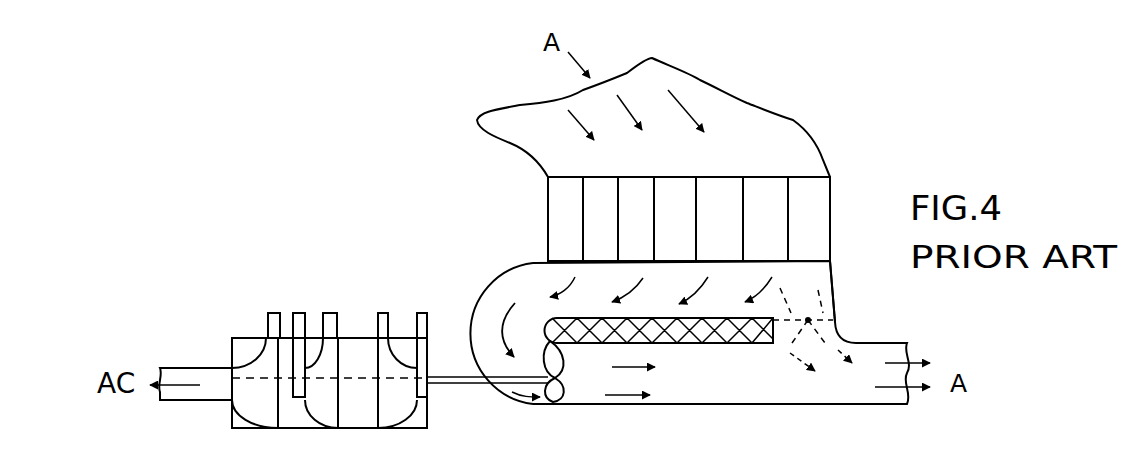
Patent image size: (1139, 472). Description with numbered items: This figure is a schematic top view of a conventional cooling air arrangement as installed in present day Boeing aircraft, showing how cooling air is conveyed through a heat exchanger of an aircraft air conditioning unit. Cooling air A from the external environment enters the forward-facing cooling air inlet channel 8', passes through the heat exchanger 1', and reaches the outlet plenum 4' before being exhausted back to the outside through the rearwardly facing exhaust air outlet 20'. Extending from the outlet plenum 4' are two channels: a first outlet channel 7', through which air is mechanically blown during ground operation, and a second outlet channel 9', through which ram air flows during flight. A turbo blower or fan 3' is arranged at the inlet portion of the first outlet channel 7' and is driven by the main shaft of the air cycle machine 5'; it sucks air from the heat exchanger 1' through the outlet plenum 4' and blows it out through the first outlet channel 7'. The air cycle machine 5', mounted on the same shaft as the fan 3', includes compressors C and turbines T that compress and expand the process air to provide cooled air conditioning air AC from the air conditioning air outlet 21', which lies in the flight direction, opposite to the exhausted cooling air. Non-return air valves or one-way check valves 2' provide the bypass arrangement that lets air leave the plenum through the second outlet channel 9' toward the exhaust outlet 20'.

The cooling air inlet channel 8' is at (653, 117).
The heat exchanger 1' is at (708, 219).
The second outlet channel 9' is at (838, 289).
The non-return air valves 2' is at (826, 329).
The exhaust air outlet 20' is at (908, 353).
The outlet plenum 4' is at (613, 327).
The turbo blower or fan 3' is at (575, 403).
The first outlet channel 7' is at (689, 355).
The air conditioning air outlet 21' is at (186, 363).
The air cycle machine 5' is at (329, 392).